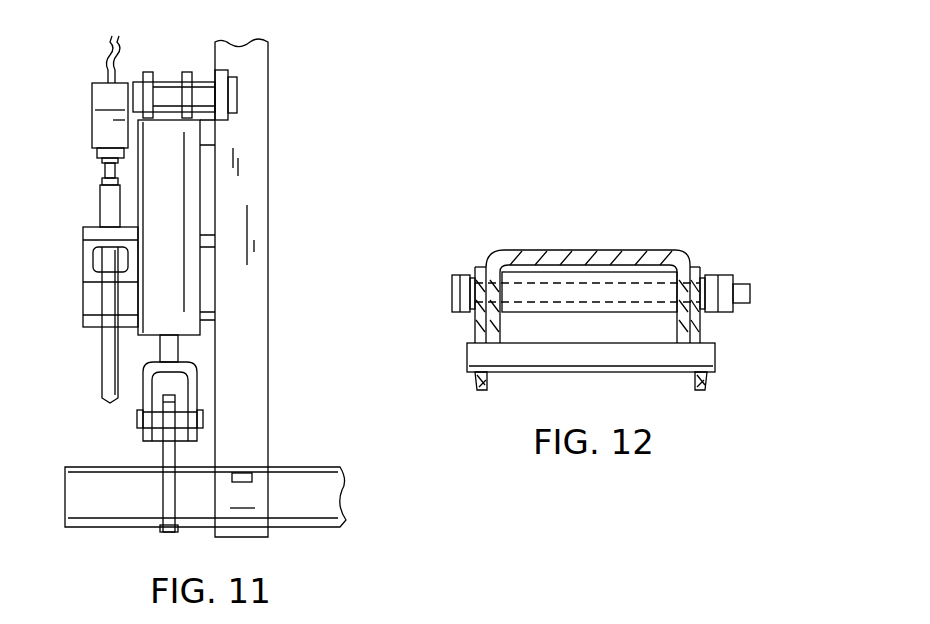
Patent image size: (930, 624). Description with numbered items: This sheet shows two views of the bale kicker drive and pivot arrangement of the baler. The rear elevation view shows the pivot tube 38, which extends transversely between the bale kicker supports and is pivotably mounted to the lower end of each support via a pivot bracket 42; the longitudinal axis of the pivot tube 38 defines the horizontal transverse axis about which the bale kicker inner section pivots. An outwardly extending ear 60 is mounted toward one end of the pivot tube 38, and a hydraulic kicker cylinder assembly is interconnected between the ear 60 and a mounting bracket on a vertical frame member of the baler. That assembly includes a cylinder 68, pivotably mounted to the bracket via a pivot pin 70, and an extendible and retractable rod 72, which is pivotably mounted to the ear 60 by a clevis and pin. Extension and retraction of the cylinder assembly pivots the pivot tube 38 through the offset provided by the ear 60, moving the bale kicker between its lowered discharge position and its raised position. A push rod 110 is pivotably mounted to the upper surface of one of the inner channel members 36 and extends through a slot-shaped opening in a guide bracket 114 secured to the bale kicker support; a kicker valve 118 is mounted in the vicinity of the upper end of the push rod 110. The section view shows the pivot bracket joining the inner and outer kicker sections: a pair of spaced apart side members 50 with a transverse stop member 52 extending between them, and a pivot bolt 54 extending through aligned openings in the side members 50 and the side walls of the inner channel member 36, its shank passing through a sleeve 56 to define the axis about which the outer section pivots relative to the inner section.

In FIG. 12, the inner inverted channel-shaped member 36 is at (637, 246).
In FIG. 11, the pivot tube 38 is at (84, 516).
In FIG. 11, the pivot bracket 42 is at (243, 537).
In FIG. 12, the side member 50 is at (470, 328).
In FIG. 12, the transverse stop member 52 is at (592, 372).
In FIG. 12, the pivot bolt 54 is at (481, 292).
In FIG. 12, the sleeve 56 is at (603, 272).
In FIG. 11, the ear 60 is at (161, 487).
In FIG. 11, the cylinder 68 is at (200, 191).
In FIG. 11, the pivot pin 70 is at (168, 81).
In FIG. 11, the extendible and retractable rod 72 is at (180, 347).
In FIG. 11, the push rod 110 is at (100, 362).
In FIG. 11, the guide bracket 114 is at (83, 298).
In FIG. 11, the kicker valve 118 is at (92, 95).